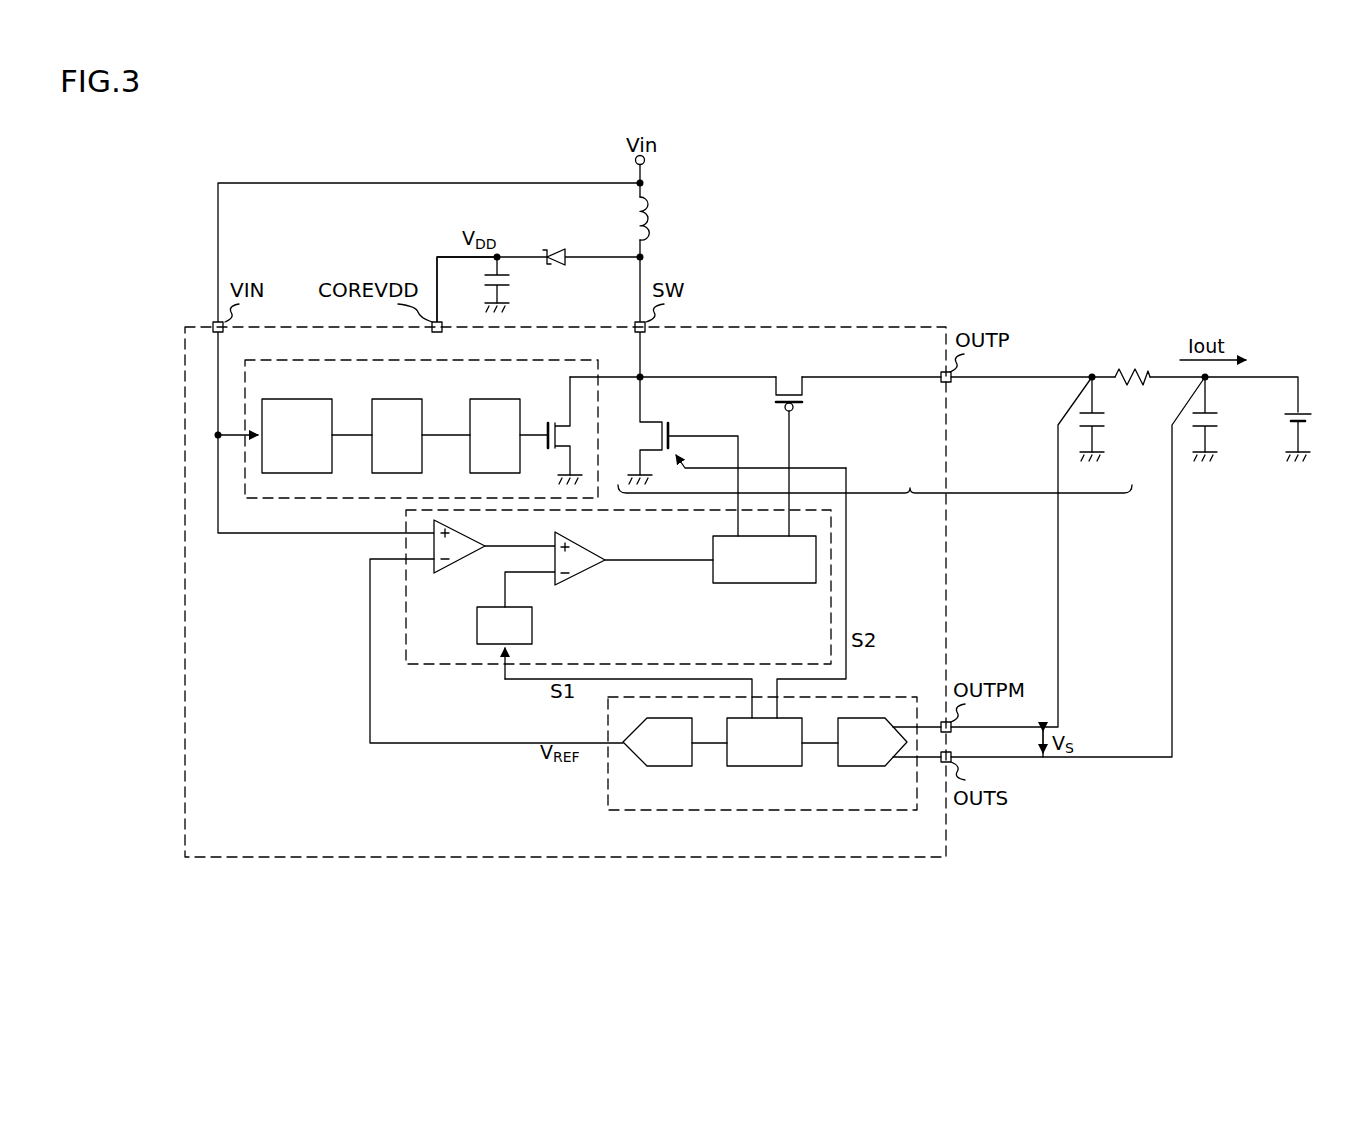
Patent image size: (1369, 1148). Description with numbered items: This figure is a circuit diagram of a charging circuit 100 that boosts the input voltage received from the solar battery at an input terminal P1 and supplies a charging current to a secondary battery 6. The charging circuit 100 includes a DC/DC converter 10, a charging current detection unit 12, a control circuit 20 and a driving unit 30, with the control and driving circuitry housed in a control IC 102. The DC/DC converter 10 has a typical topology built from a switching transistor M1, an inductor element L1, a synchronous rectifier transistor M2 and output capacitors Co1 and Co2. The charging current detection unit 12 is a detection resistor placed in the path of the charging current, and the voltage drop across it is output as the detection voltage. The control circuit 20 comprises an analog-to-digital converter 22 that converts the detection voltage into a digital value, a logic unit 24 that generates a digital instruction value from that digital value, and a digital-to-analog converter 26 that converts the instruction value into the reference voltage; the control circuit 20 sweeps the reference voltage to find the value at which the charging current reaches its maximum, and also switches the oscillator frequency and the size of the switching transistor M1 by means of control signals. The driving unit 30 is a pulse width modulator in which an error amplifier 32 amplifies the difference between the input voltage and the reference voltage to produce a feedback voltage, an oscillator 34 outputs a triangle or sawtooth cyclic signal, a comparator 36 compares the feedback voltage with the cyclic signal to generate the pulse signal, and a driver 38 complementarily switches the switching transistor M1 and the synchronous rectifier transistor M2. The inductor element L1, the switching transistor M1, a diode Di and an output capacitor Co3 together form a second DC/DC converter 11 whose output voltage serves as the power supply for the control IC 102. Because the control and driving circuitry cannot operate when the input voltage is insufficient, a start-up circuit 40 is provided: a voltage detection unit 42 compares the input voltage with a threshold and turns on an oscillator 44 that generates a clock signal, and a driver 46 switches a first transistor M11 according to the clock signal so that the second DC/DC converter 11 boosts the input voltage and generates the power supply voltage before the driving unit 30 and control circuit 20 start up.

The charging circuit 100 is at (789, 925).
The control IC 102 is at (660, 858).
The DC/DC converter 10 is at (875, 491).
The second DC/DC converter 11 is at (426, 234).
The charging current detection unit 12 is at (1128, 370).
The secondary battery 6 is at (1314, 418).
The control circuit 20 is at (733, 812).
The A/D converter 22 is at (863, 768).
The logic unit 24 is at (770, 768).
The D/A converter 26 is at (666, 768).
The driving unit 30 is at (440, 666).
The error amplifier 32 is at (462, 575).
The oscillator 34 is at (534, 626).
The comparator 36 is at (590, 538).
The driver 38 is at (775, 585).
The start-up circuit 40 is at (468, 360).
The voltage detection unit 42 is at (300, 398).
The oscillator 44 is at (396, 398).
The driver 46 is at (490, 398).
The first transistor M11 is at (546, 420).
The switching transistor M1 is at (663, 418).
The synchronous rectifier transistor M2 is at (806, 400).
The inductor element L1 is at (652, 218).
The diode Di is at (554, 246).
The output capacitor Co1 is at (1109, 418).
The output capacitor Co2 is at (1222, 418).
The output capacitor Co3 is at (514, 280).
The input terminal P1 is at (646, 160).